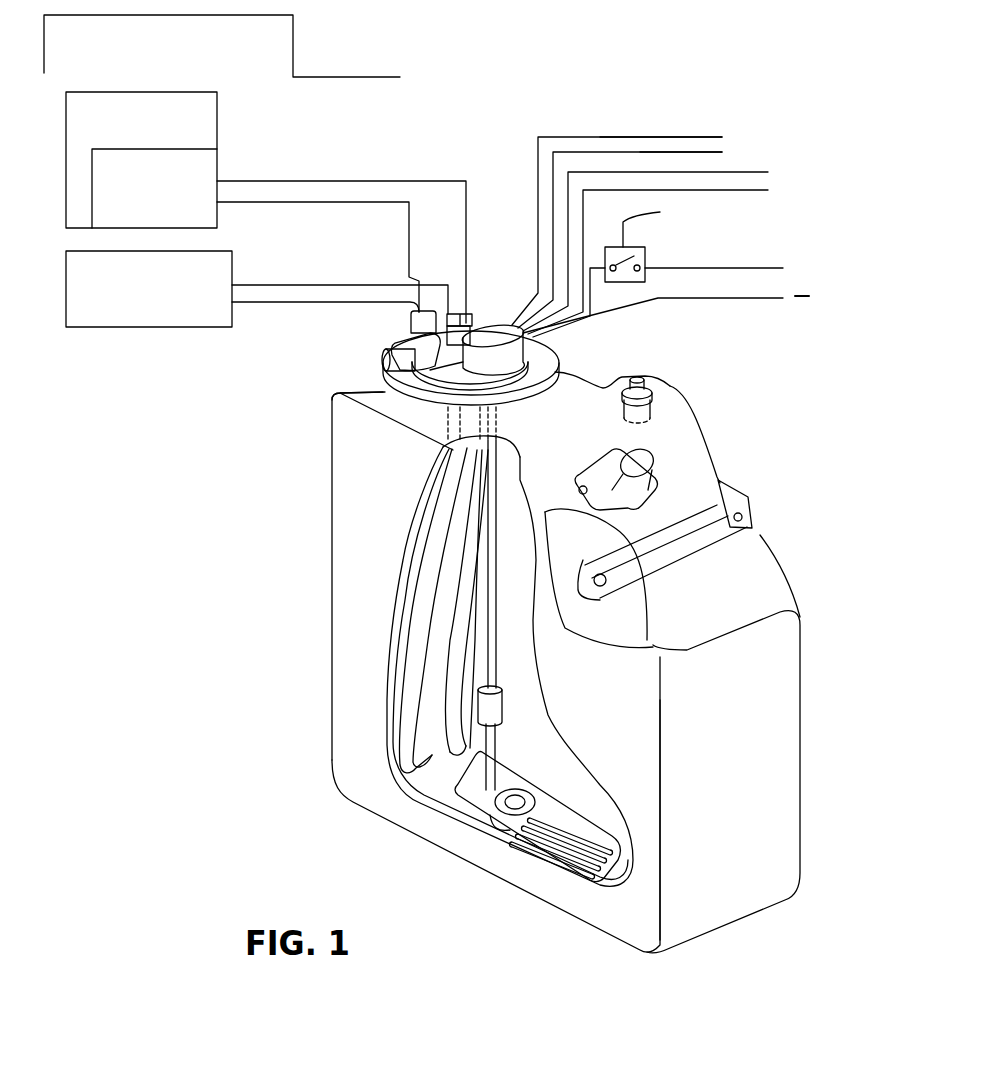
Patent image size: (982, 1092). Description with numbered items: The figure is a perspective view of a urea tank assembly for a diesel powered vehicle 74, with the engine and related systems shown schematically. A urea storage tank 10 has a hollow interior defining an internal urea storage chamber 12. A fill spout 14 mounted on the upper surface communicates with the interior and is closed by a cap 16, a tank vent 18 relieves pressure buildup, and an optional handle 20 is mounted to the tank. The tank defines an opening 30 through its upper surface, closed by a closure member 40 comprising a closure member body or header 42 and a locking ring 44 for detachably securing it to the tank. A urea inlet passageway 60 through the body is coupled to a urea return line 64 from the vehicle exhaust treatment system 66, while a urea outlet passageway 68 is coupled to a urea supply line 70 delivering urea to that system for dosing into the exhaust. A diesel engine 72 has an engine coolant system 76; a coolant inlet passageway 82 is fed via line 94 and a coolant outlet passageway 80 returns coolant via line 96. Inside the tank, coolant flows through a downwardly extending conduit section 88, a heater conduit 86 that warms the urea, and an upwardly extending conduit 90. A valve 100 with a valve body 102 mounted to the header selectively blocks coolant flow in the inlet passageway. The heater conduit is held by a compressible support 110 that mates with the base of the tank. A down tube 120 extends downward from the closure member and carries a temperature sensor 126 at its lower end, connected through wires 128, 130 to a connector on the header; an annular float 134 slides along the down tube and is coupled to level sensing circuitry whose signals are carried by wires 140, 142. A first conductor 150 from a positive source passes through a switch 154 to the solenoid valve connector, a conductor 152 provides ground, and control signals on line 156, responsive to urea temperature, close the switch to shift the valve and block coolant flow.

The urea storage tank 10 is at (760, 561).
The internal urea storage chamber 12 is at (636, 716).
The fill spout 14 is at (652, 483).
The cap 16 is at (643, 468).
The tank vent 18 is at (642, 382).
The handle 20 is at (727, 503).
The opening 30 is at (403, 399).
The closure member 40 is at (560, 351).
The closure member body 42 is at (556, 357).
The locking ring 44 is at (397, 388).
The urea inlet passageway 60 is at (440, 322).
The urea return line 64 is at (293, 311).
The vehicle exhaust treatment system 66 is at (192, 327).
The urea outlet passageway 68 is at (447, 318).
The urea supply line 70 is at (293, 285).
The diesel engine 72 is at (208, 121).
The vehicle 74 is at (188, 69).
The engine coolant system 76 is at (209, 167).
The coolant outlet passageway 80 is at (390, 344).
The coolant inlet passageway 82 is at (466, 321).
The heater conduit 86 is at (543, 852).
The downwardly extending conduit section 88 is at (463, 643).
The upwardly extending conduit 90 is at (437, 572).
The coolant supply line 94 is at (313, 179).
The coolant return line 96 is at (288, 203).
The valve 100 is at (494, 334).
The valve body 102 is at (410, 372).
The support 110 is at (497, 838).
The down tube 120 is at (493, 673).
The temperature sensor 126 is at (473, 797).
The wire 128 is at (627, 137).
The wire 130 is at (668, 152).
The float 134 is at (483, 707).
The wire 140 is at (755, 172).
The wire 142 is at (750, 191).
The first conductor 150 is at (722, 268).
The conductor 152 is at (738, 298).
The switch 154 is at (646, 255).
The control signal line 156 is at (662, 219).